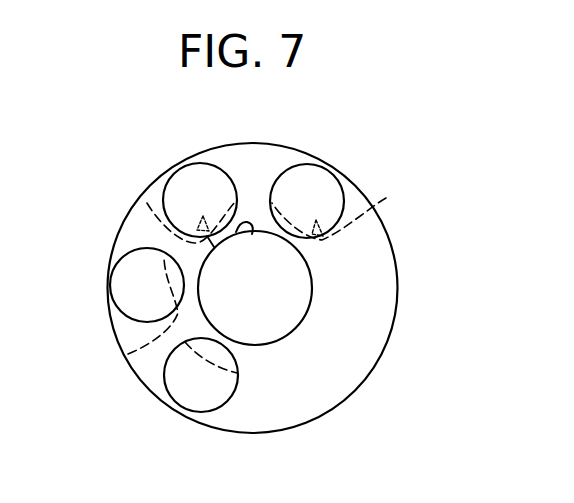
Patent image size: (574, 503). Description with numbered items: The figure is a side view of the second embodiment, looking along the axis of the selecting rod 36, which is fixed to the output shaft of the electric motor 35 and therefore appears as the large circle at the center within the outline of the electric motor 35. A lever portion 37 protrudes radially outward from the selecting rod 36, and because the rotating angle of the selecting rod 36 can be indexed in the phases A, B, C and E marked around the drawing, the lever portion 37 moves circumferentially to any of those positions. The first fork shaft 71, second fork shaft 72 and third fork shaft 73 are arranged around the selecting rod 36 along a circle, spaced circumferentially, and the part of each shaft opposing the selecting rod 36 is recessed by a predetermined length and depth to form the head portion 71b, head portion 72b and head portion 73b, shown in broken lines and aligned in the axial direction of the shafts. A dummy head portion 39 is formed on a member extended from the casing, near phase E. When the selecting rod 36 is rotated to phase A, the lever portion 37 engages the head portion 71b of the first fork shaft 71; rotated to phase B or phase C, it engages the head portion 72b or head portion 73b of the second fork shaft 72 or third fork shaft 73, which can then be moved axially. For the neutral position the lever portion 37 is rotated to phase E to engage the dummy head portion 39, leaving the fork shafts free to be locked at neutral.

The electric motor 35 is at (396, 249).
The selecting rod 36 is at (273, 315).
The lever portion 37 is at (250, 236).
The dummy head portion 39 is at (211, 403).
The first fork shaft 71 is at (123, 272).
The head portion 71b is at (128, 354).
The second fork shaft 72 is at (197, 166).
The head portion 72b is at (147, 203).
The third fork shaft 73 is at (312, 169).
The head portion 73b is at (386, 198).
The phase A is at (130, 287).
The phase B is at (198, 192).
The phase C is at (316, 192).
The phase E is at (197, 383).